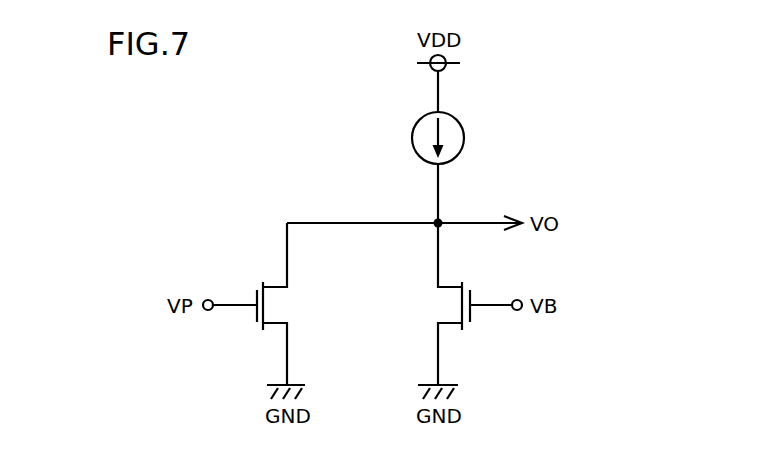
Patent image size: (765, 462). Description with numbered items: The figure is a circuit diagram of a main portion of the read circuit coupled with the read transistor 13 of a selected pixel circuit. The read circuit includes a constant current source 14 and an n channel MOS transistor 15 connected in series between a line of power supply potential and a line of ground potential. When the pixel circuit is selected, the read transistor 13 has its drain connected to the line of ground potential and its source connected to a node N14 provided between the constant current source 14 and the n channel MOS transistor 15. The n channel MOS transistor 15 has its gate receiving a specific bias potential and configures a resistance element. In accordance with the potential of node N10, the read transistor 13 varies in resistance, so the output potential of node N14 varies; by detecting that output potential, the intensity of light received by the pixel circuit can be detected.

The read transistor 13 is at (277, 283).
The constant current source 14 is at (412, 139).
The n channel MOS transistor 15 is at (448, 325).
The node N10 is at (208, 311).
The node N14 is at (435, 227).